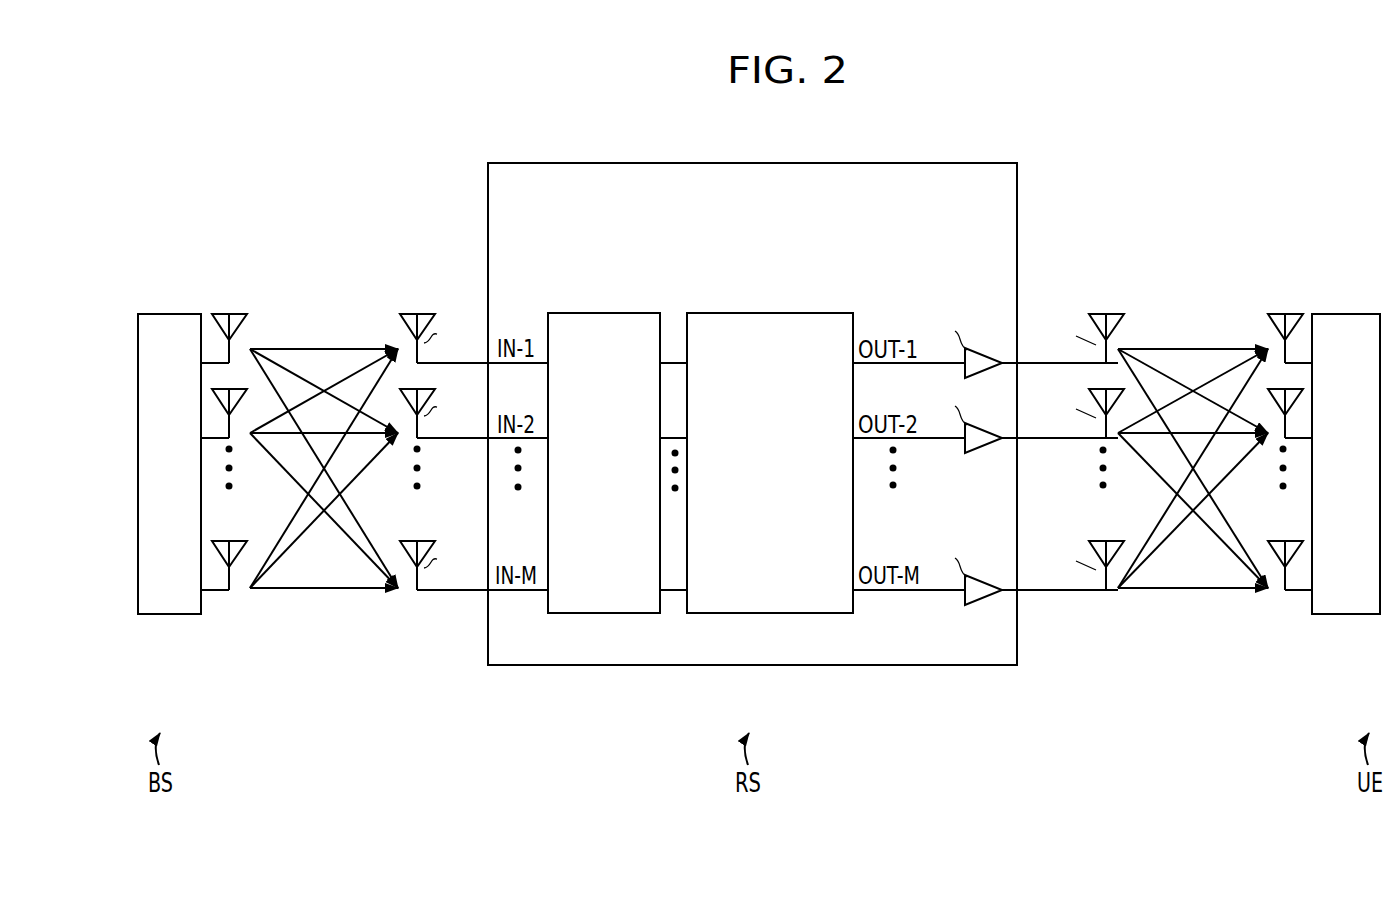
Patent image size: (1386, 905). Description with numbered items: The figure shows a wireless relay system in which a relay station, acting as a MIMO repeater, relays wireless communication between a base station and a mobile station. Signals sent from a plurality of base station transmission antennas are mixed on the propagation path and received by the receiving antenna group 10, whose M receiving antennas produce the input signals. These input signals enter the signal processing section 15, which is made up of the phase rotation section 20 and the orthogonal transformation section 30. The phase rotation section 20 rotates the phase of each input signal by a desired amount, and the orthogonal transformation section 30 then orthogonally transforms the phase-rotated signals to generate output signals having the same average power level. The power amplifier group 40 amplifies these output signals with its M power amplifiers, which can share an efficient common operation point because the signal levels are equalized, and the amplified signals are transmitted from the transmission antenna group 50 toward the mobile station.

The receiving antenna group 10 is at (420, 240).
The signal processing section 15 is at (700, 404).
The phase rotation section 20 is at (604, 313).
The orthogonal transformation section 30 is at (770, 429).
The power amplifier group 40 is at (971, 305).
The transmission antenna group 50 is at (1103, 292).